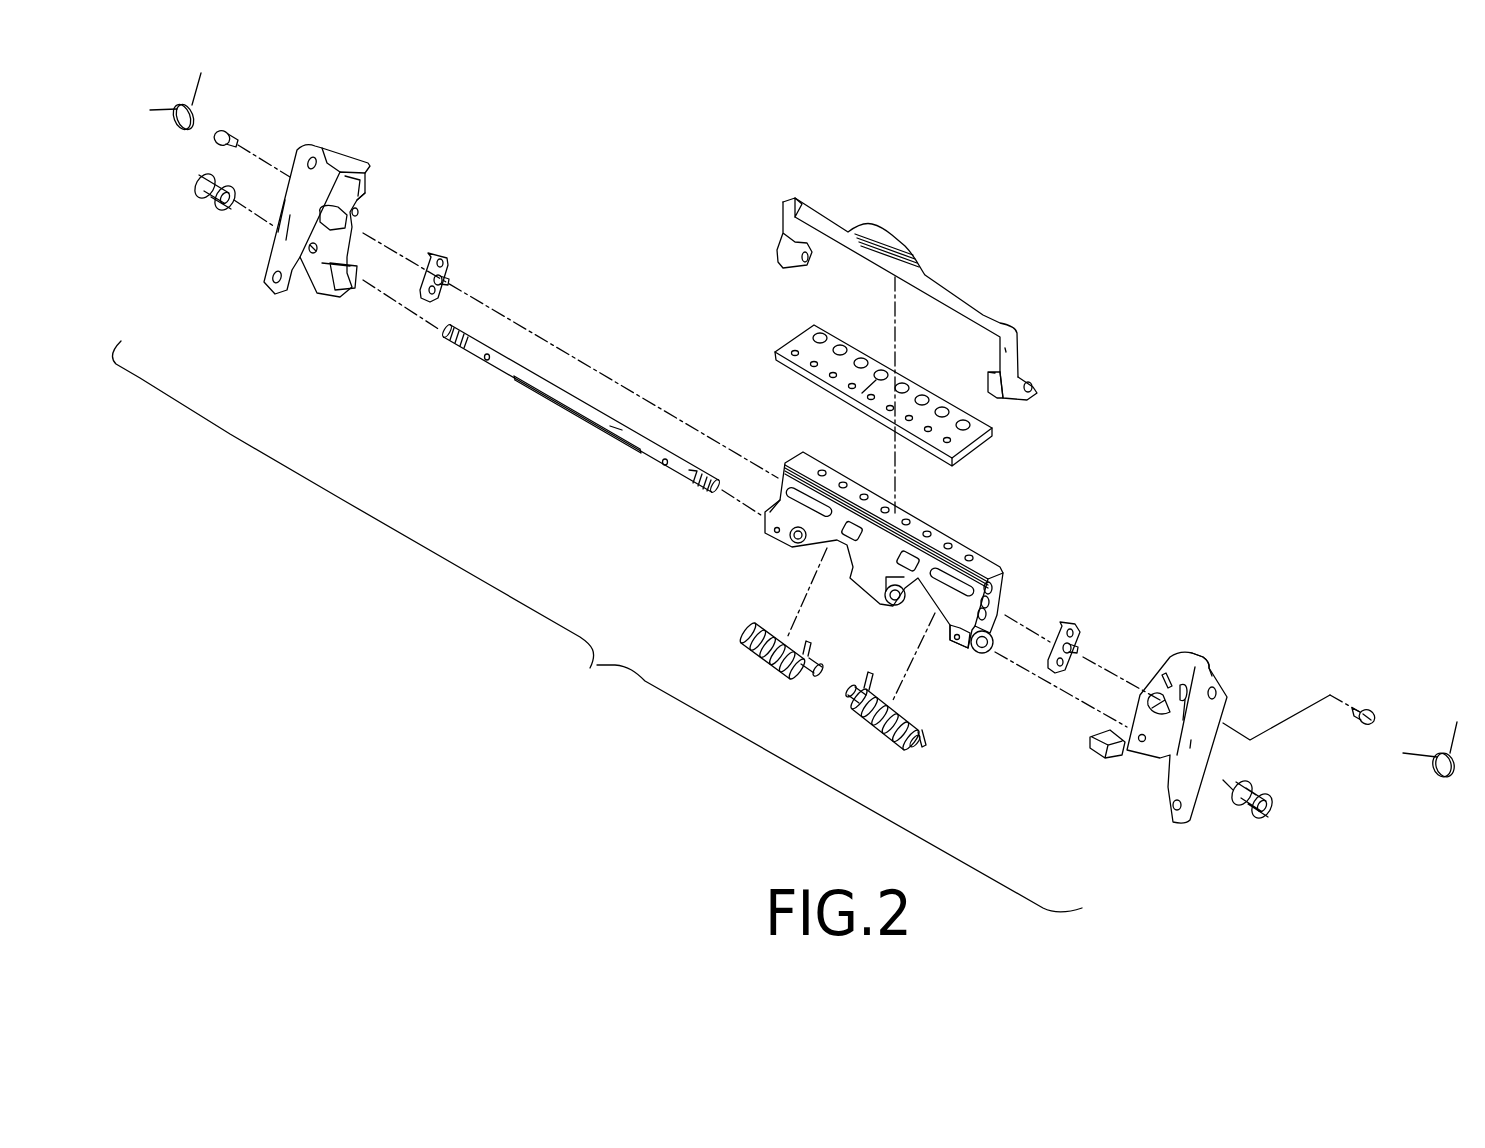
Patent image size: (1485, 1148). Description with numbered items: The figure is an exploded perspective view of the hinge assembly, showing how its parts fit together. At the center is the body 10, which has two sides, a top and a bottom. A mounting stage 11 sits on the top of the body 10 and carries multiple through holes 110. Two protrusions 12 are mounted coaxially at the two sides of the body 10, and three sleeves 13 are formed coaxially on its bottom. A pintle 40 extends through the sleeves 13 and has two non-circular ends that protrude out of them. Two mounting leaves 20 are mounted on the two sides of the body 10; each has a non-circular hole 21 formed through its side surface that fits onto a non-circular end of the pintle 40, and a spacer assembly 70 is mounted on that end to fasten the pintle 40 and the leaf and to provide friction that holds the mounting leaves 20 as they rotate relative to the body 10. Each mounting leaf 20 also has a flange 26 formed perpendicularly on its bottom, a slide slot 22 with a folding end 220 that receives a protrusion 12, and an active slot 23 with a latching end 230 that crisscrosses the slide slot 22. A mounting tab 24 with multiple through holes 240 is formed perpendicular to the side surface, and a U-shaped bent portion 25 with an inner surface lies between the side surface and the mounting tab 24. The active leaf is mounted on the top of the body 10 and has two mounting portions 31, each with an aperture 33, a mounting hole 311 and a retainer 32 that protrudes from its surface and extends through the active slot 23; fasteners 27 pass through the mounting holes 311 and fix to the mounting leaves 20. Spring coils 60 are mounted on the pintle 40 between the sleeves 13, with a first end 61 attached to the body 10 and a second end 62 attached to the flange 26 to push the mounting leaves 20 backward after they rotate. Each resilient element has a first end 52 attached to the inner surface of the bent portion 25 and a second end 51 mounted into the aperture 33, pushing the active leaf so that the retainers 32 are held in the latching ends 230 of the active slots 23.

The body 10 is at (993, 524).
The mounting stage 11 is at (807, 333).
The through holes 110 is at (813, 362).
The protrusions 12 is at (1078, 643).
The sleeves 13 is at (962, 652).
The mounting leaves 20 is at (1187, 662).
The non-circular hole 21 is at (1141, 742).
The slide slot 22 is at (345, 223).
The active slot 23 is at (342, 188).
The folding end 220 is at (300, 248).
The latching end 230 is at (340, 280).
The mounting tab 24 is at (1217, 688).
The through holes 240 is at (1167, 807).
The bent portion 25 is at (1200, 660).
The flange 26 is at (1110, 750).
The fastener 27 is at (1377, 703).
The mounting portion 31 is at (1013, 348).
The mounting hole 311 is at (1037, 388).
The retainer 32 is at (990, 390).
The aperture 33 is at (785, 227).
The pintle 40 is at (557, 397).
The second end 51 is at (1407, 755).
The first end 52 is at (1453, 730).
The spring coil 60 is at (880, 738).
The first end 61 is at (868, 683).
The second end 62 is at (923, 743).
The spacer assembly 70 is at (180, 205).